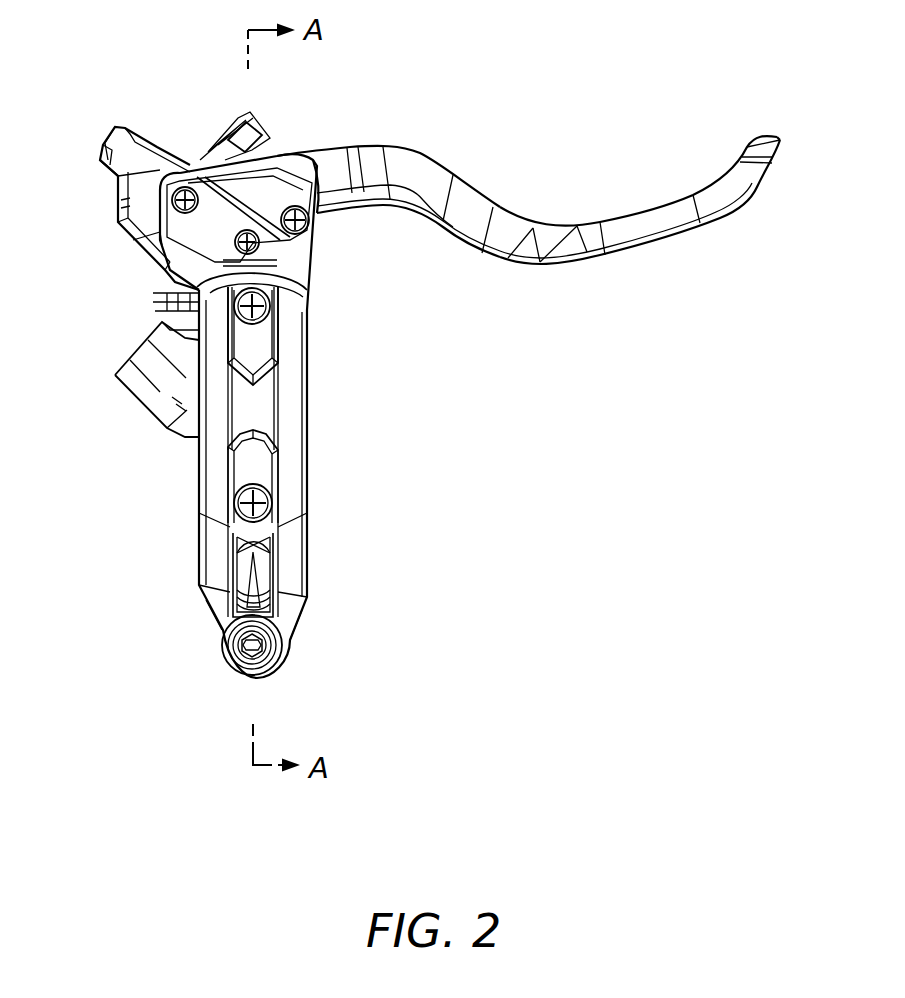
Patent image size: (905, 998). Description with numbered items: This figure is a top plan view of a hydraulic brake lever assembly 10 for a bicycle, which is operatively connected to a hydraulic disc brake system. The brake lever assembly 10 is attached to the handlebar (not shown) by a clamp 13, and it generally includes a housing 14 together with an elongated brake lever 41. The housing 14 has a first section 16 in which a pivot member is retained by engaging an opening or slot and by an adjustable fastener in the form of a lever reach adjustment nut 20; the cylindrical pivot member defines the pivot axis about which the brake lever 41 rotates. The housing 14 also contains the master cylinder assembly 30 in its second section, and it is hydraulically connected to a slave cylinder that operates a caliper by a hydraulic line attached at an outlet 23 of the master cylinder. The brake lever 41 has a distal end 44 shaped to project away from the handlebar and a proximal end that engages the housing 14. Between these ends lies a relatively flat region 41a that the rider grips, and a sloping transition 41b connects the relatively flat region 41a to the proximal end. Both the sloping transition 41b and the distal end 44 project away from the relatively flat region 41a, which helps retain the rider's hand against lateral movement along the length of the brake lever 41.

The brake lever assembly 10 is at (474, 631).
The clamp 13 is at (295, 609).
The housing 14 is at (391, 448).
The first section 16 is at (140, 221).
The lever reach adjustment nut 20 is at (254, 128).
The outlet 23 is at (157, 390).
The master cylinder assembly 30 is at (178, 482).
The brake lever 41 is at (716, 263).
The relatively flat region 41a is at (613, 215).
The sloping transition 41b is at (470, 230).
The distal end 44 is at (762, 136).